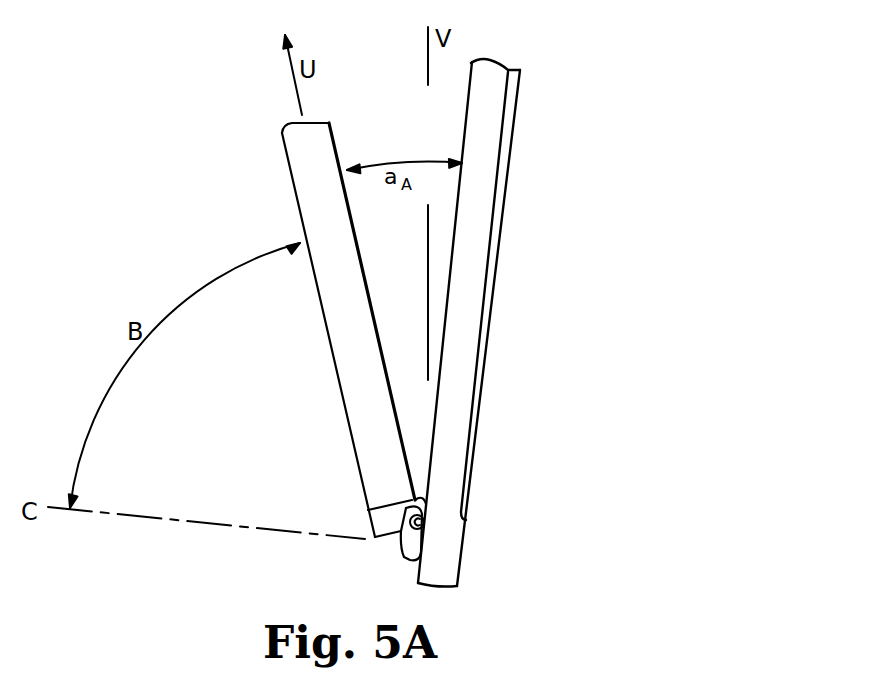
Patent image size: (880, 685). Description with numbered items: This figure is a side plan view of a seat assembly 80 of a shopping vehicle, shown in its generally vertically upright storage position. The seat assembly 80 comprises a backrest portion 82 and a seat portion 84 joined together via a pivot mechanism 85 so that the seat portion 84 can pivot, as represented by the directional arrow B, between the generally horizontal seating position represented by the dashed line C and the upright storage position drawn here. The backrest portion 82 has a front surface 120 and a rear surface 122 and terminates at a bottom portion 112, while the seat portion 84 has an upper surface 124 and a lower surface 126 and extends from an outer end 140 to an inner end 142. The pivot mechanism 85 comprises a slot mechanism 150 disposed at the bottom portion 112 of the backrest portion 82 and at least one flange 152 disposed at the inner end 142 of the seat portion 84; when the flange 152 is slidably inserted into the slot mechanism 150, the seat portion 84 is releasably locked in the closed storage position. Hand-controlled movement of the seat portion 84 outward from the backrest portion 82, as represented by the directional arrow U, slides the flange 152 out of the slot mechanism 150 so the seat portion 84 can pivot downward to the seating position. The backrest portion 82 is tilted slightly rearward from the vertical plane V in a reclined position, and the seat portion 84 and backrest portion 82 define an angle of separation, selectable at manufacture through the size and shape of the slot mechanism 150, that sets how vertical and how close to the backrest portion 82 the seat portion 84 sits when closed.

The seat assembly 80 is at (557, 173).
The backrest portion 82 is at (502, 240).
The seat portion 84 is at (318, 310).
The pivot mechanism 85 is at (398, 552).
The bottom portion 112 is at (433, 572).
The front surface 120 is at (498, 325).
The rear surface 122 is at (512, 120).
The upper surface 124 is at (373, 300).
The lower surface 126 is at (335, 371).
The outer end 140 is at (307, 316).
The inner end 142 is at (378, 522).
The slot mechanism 150 is at (412, 553).
The flange 152 is at (424, 524).